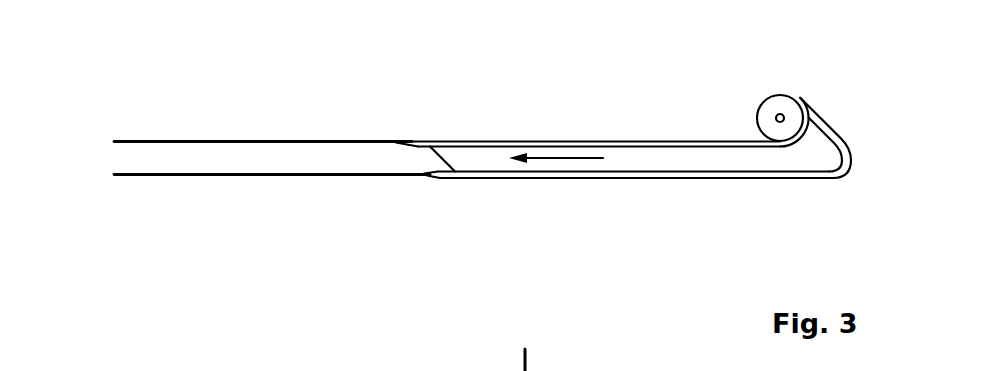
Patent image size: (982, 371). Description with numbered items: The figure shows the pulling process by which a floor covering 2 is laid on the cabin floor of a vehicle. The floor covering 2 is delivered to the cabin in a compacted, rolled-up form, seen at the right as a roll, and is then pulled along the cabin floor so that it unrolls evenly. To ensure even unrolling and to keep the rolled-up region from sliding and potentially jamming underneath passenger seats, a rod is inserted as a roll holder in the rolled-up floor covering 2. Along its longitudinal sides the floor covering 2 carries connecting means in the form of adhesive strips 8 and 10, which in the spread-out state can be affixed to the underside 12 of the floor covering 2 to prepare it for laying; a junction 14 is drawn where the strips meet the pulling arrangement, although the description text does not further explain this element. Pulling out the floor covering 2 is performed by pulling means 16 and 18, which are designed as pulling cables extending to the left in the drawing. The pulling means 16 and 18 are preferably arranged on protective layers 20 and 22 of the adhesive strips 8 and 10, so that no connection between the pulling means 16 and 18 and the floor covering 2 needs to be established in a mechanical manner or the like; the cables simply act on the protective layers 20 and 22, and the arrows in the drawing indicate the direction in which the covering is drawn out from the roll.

The floor covering 2 is at (616, 84).
The adhesive strip 8 is at (587, 174).
The adhesive strip 10 is at (662, 141).
The underside of the floor covering 12 is at (716, 164).
The connecting web 14 is at (449, 160).
The pulling means 16 is at (263, 142).
The pulling means 18 is at (283, 176).
The protective layer 20 is at (403, 141).
The protective layer 22 is at (448, 177).